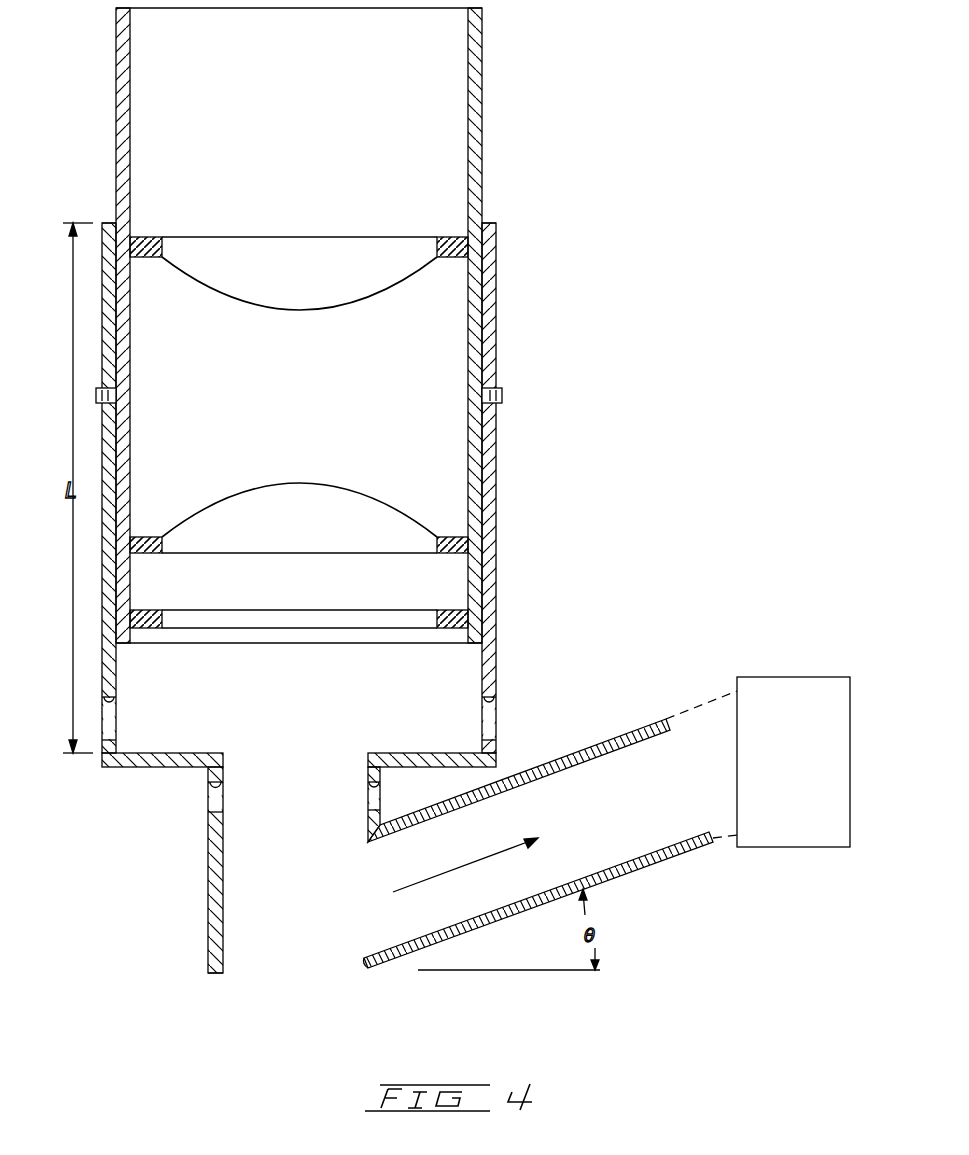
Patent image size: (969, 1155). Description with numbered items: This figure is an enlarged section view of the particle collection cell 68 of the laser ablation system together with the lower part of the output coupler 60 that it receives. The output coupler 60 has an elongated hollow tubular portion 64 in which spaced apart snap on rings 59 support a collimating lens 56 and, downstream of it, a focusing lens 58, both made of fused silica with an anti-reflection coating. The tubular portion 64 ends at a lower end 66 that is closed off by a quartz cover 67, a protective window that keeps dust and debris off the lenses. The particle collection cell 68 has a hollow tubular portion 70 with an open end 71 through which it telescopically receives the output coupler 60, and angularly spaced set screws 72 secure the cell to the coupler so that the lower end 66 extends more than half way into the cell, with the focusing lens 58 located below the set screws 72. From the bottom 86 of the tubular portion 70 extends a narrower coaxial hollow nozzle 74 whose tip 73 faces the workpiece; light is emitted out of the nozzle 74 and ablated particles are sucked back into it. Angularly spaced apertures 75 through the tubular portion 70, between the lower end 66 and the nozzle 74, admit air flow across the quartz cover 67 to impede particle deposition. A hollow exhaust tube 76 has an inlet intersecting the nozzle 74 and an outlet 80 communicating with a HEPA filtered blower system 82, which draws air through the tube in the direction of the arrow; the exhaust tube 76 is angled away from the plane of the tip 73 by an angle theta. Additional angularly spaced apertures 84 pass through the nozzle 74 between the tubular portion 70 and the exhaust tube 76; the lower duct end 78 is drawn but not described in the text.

The collimating lens 56 is at (400, 236).
The focusing lens 58 is at (238, 490).
The snap on rings 59 is at (147, 233).
The output coupler 60 is at (316, 325).
The tubular portion 64 is at (115, 102).
The lower end 66 is at (286, 647).
The quartz cover 67 is at (407, 630).
The particle collection cell 68 is at (371, 522).
The tubular portion 70 is at (496, 518).
The open end 71 is at (489, 222).
The set screws 72 is at (502, 395).
The tip 73 is at (217, 976).
The nozzle 74 is at (187, 918).
The apertures 75 is at (113, 718).
The exhaust tube 76 is at (623, 727).
The lower duct wall end 78 is at (372, 970).
The outlet 80 is at (503, 907).
The HEPA filtered blower system 82 is at (795, 677).
The apertures 84 is at (365, 800).
The bottom 86 is at (138, 768).